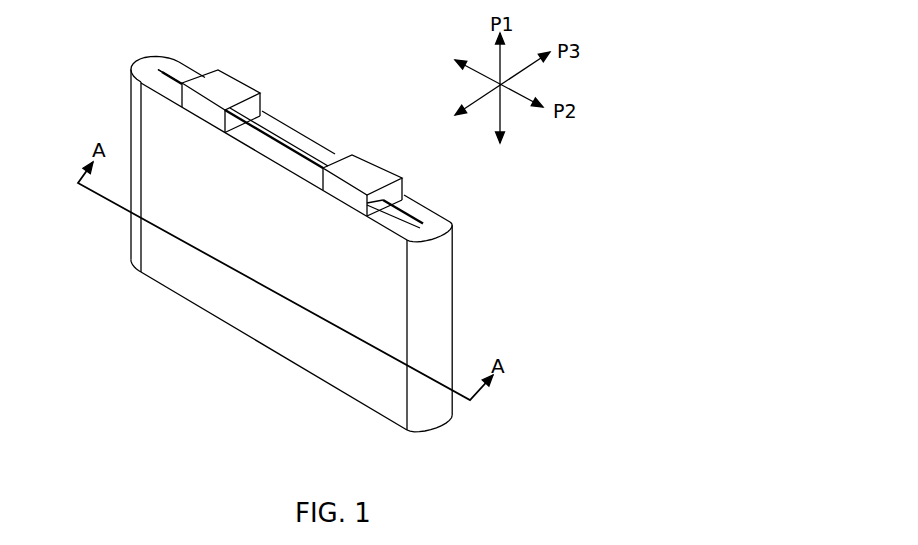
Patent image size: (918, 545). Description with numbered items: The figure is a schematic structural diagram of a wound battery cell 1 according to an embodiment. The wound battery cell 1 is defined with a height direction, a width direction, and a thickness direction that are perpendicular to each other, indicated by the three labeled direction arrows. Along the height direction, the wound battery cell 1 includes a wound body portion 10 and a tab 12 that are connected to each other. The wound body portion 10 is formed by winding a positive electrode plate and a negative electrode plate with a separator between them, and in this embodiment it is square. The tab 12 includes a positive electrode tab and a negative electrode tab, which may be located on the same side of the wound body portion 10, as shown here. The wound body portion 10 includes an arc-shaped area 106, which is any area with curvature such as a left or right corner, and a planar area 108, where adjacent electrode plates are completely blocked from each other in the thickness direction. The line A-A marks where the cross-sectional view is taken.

The wound battery cell 1 is at (149, 43).
The wound body portion 10 is at (293, 340).
The tab 12 is at (233, 93).
The arc-shaped area 106 is at (430, 315).
The planar area 108 is at (258, 238).